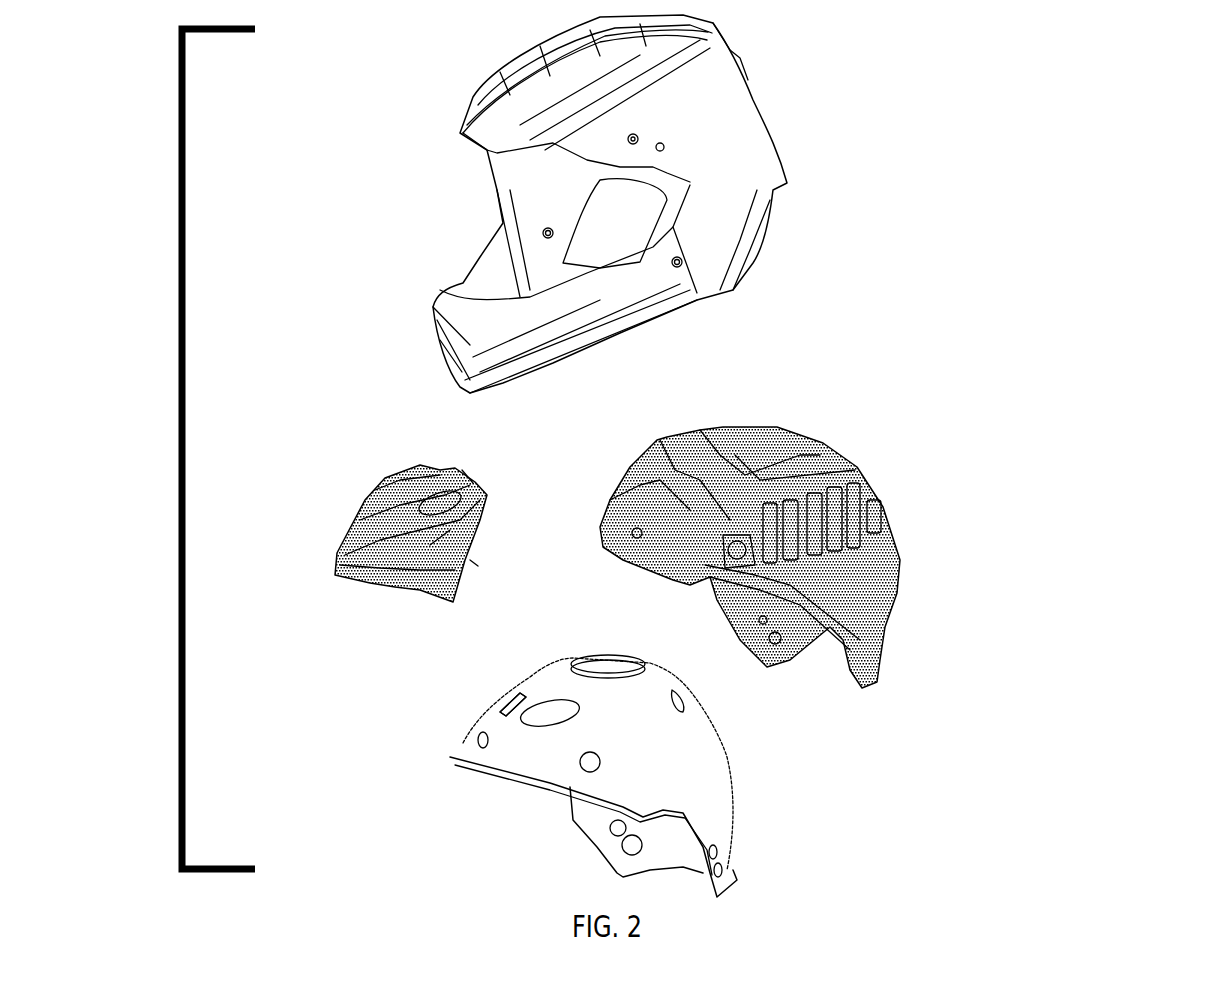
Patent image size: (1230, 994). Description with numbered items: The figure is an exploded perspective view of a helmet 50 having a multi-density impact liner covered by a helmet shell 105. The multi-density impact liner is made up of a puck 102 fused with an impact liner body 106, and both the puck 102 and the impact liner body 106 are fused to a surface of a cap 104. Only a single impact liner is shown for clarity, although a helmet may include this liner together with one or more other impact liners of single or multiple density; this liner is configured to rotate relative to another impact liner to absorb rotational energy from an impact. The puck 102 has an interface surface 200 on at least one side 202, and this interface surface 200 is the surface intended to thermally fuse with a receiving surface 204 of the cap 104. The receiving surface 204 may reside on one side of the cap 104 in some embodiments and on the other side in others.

The helmet 50 is at (1090, 160).
The helmet shell 105 is at (468, 97).
The impact liner body 106 is at (822, 450).
The cap 104 is at (715, 772).
The puck 102 is at (407, 540).
The side 202 is at (480, 530).
The interface surface 200 is at (476, 563).
The receiving surface 204 is at (502, 728).